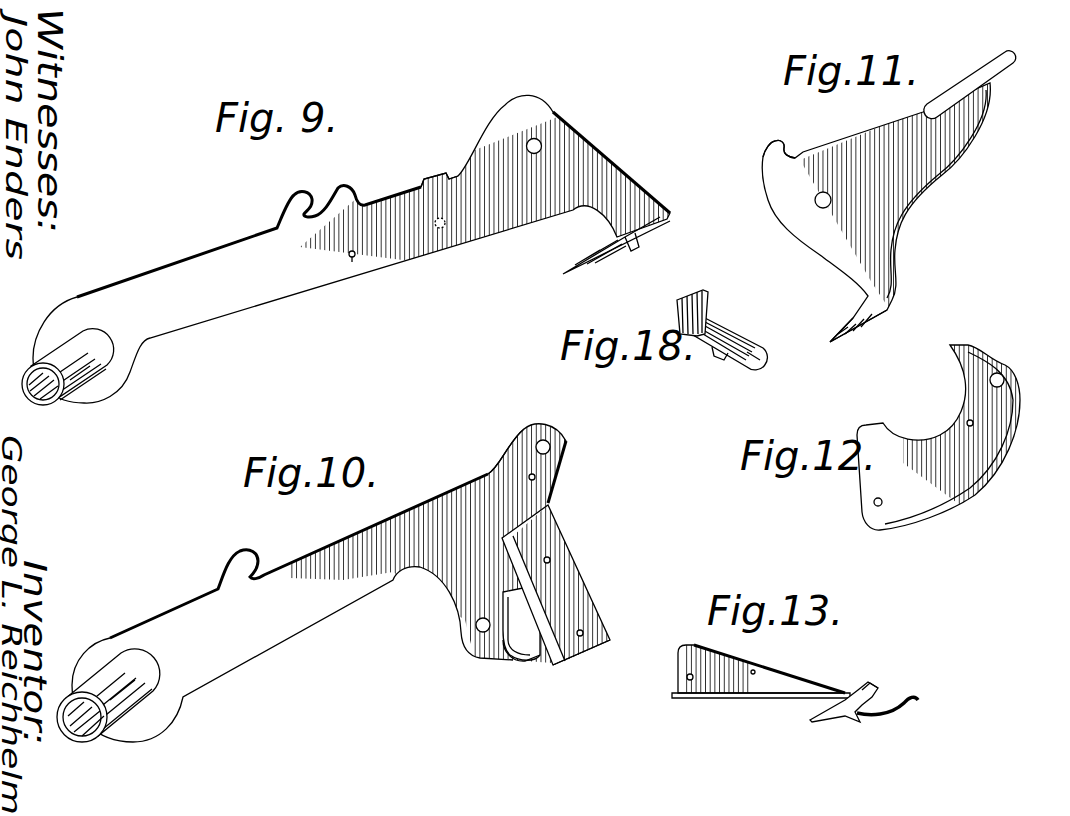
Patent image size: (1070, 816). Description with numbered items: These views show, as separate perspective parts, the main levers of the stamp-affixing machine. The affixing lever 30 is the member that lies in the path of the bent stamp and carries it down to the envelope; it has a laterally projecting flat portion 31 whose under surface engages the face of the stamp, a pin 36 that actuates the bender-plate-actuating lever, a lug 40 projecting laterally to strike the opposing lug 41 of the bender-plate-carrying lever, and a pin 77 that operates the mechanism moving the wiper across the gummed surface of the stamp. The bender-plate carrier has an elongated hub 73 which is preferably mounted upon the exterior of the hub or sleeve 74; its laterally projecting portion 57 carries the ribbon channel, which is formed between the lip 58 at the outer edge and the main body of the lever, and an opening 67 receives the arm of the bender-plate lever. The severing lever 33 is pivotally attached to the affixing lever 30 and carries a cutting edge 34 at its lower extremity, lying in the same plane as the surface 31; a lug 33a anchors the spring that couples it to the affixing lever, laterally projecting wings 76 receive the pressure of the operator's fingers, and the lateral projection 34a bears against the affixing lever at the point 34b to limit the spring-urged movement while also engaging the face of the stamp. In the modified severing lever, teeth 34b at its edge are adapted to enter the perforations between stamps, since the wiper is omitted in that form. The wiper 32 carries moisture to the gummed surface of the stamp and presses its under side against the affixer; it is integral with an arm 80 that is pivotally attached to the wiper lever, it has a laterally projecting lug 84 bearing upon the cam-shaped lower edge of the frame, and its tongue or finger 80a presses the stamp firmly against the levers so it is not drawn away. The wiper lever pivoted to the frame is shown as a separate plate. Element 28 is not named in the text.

In FIG. 9, the affixing lever 30 is at (598, 158).
In FIG. 9, the laterally projecting flat portion 31 is at (628, 238).
In FIG. 9, the pin 36 is at (353, 260).
In FIG. 9, the lug 40 is at (427, 181).
In FIG. 9, the pin 77 is at (451, 239).
In FIG. 9, the elongated hub 73 is at (38, 393).
In FIG. 10, the hub or sleeve 74 is at (92, 731).
In FIG. 10, the lip 58 is at (506, 537).
In FIG. 10, the laterally projecting portion 57 is at (549, 500).
In FIG. 10, the plate 28 is at (577, 657).
In FIG. 10, the opposing lug 41 is at (533, 657).
In FIG. 10, the opening 67 is at (518, 618).
In FIG. 11, the severing lever 33 is at (910, 183).
In FIG. 18, the severing lever 33 is at (708, 297).
In FIG. 11, the lug 33a is at (773, 146).
In FIG. 11, the cutting edge 34 is at (833, 340).
In FIG. 18, the cutting edge 34 is at (749, 368).
In FIG. 11, the lateral projection 34a is at (867, 317).
In FIG. 18, the lateral projection 34a is at (749, 343).
In FIG. 18, the point / teeth 34b is at (727, 359).
In FIG. 11, the laterally projecting wings 76 is at (1003, 67).
In FIG. 13, the arm 80 is at (780, 696).
In FIG. 13, the tongue or finger 80a is at (900, 711).
In FIG. 13, the laterally projecting lug 84 is at (871, 689).
In FIG. 13, the wiper 32 is at (827, 721).